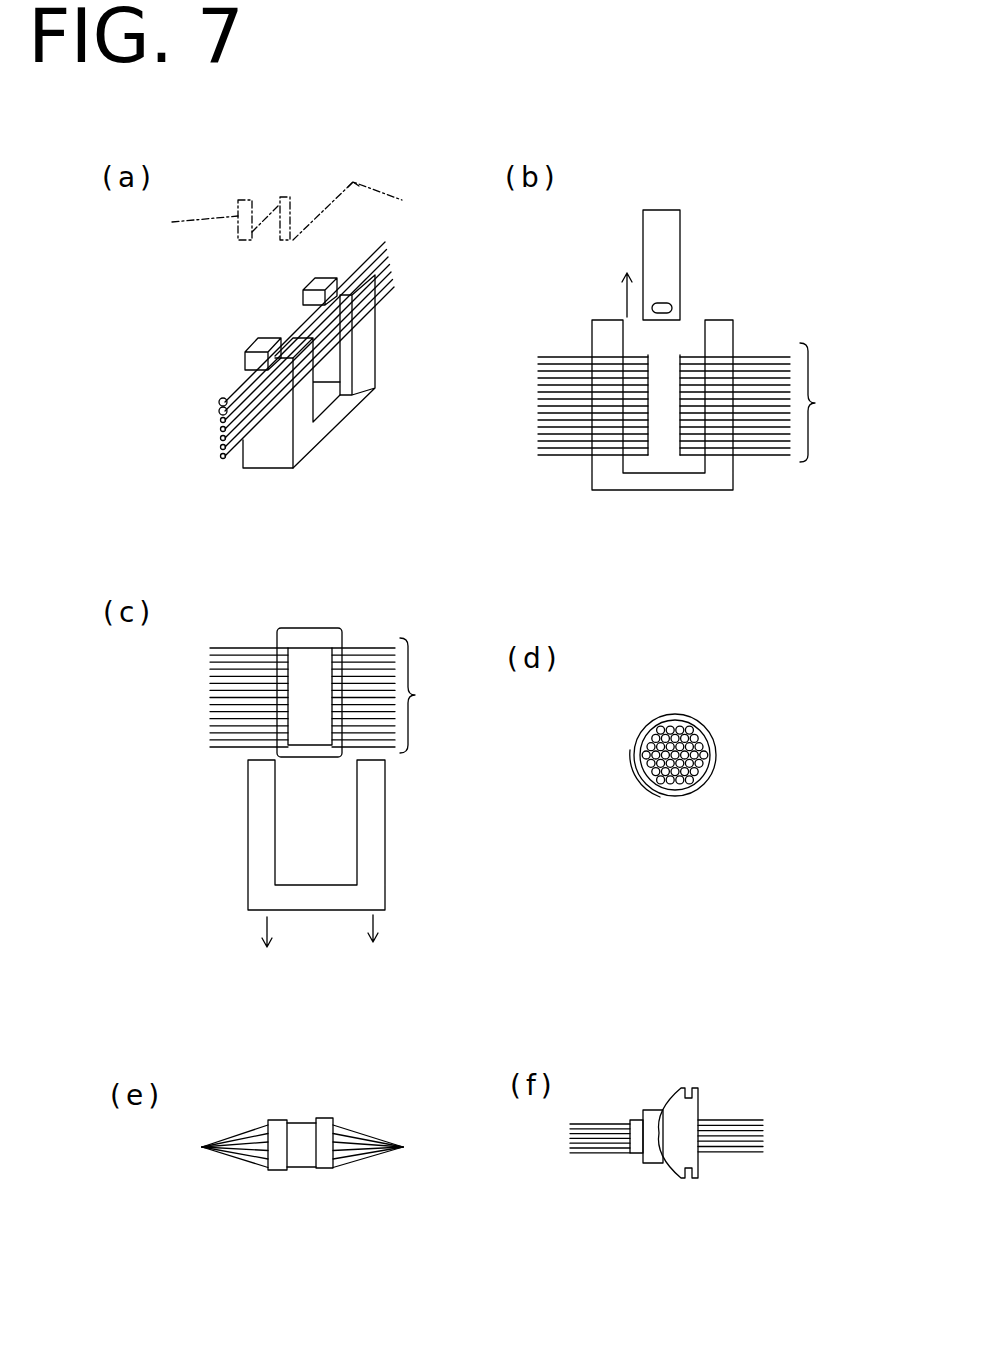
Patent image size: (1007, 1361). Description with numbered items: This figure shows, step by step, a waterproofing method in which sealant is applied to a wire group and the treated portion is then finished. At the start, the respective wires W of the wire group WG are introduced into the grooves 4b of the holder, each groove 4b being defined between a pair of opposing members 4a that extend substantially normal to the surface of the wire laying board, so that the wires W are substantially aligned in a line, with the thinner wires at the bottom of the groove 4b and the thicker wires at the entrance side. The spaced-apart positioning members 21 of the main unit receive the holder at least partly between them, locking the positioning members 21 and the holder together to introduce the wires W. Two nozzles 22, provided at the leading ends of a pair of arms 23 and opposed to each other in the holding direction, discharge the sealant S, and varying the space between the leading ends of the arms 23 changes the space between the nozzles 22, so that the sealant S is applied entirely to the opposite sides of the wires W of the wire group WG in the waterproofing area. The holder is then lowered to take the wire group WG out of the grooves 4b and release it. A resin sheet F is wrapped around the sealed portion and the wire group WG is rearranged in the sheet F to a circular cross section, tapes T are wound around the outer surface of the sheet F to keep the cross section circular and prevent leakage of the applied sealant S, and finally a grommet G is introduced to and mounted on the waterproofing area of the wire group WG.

The positioning member 21 is at (292, 211).
The opposing member 4a is at (347, 318).
The groove 4b is at (340, 288).
The nozzle 22 is at (675, 297).
The arm 23 is at (667, 237).
The wire W is at (222, 437).
The wire group WG is at (211, 463).
The sealant S is at (668, 445).
The resin sheet F is at (317, 627).
The tape T is at (325, 1120).
The grommet G is at (677, 1158).